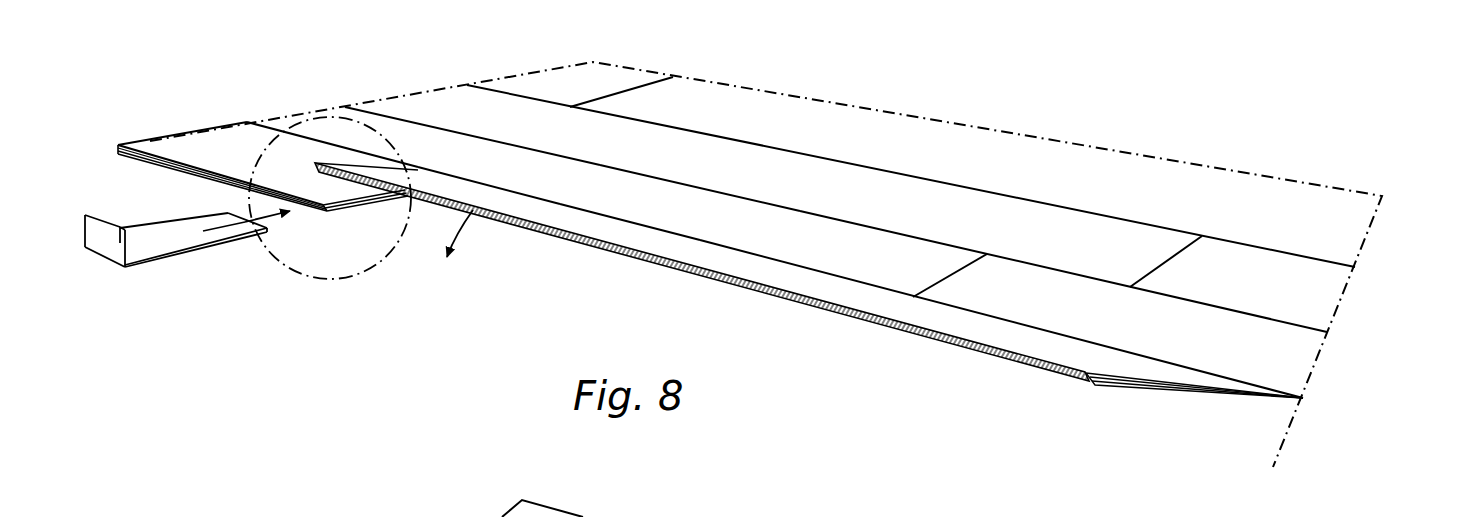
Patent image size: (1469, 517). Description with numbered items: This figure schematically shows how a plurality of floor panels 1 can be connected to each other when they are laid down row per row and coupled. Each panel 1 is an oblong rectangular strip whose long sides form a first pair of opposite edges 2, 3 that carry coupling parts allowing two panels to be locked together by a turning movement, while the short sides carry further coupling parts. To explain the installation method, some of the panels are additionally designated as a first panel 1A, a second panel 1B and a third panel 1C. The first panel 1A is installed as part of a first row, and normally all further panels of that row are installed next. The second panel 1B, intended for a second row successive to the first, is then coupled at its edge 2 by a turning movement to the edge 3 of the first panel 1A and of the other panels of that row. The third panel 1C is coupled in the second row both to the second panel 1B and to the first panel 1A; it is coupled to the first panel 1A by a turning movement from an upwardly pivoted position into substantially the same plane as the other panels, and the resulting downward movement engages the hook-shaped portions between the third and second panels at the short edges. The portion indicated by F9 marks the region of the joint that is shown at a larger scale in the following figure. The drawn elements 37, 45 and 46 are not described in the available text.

The panel 1 is at (232, 147).
The first panel 1A is at (417, 168).
The second panel 1B is at (177, 148).
The third panel 1C is at (700, 255).
The first opposite edge 2 is at (538, 203).
The first opposite edge 3 is at (630, 213).
The tool bar 37 is at (168, 240).
The upturned flange of tool 45 is at (108, 223).
The displacement direction 46 is at (247, 222).
The portion indicated by F9 is at (338, 277).